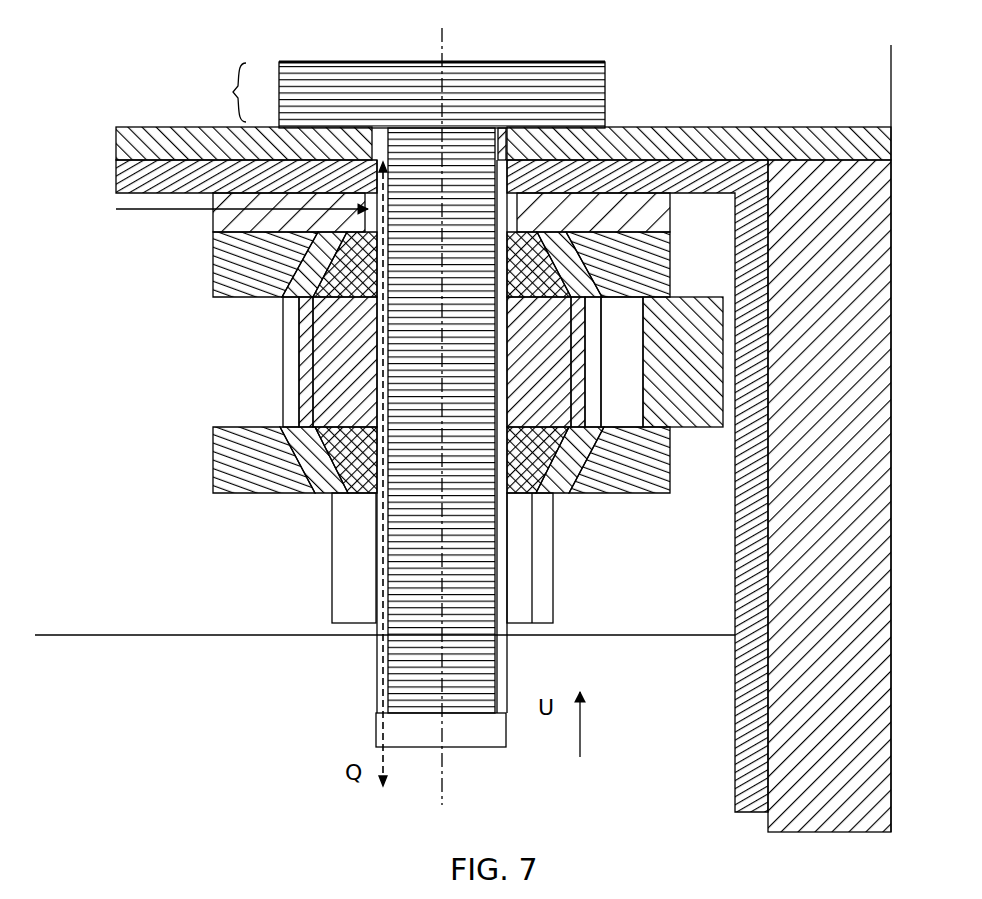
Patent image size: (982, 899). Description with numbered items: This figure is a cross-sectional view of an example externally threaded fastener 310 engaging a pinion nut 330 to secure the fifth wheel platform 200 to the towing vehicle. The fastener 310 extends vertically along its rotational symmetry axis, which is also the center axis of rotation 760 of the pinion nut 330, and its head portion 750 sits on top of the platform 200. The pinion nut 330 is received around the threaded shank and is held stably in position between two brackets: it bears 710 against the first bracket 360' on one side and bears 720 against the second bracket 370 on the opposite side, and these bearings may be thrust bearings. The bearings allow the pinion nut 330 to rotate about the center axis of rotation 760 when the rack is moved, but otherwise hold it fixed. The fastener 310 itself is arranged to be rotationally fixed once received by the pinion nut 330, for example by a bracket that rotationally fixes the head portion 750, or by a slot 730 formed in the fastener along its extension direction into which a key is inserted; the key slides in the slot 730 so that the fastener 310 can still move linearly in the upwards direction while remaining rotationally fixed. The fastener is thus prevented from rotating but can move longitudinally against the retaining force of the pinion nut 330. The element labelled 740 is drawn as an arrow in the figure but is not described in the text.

The fifth wheel platform 200 is at (660, 145).
The threaded fastener 310 is at (580, 72).
The pinion nut 330 is at (330, 355).
The first bracket 360' is at (386, 224).
The second bracket 370 is at (227, 435).
The bearing 710 is at (308, 267).
The bearing 720 is at (317, 473).
The slot 730 is at (385, 600).
The radial arrow 740 is at (213, 208).
The head portion 750 is at (232, 91).
The center axis of rotation 760 is at (470, 409).